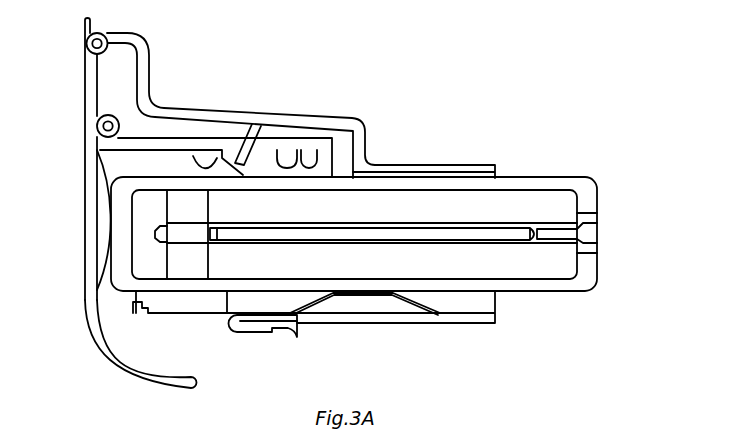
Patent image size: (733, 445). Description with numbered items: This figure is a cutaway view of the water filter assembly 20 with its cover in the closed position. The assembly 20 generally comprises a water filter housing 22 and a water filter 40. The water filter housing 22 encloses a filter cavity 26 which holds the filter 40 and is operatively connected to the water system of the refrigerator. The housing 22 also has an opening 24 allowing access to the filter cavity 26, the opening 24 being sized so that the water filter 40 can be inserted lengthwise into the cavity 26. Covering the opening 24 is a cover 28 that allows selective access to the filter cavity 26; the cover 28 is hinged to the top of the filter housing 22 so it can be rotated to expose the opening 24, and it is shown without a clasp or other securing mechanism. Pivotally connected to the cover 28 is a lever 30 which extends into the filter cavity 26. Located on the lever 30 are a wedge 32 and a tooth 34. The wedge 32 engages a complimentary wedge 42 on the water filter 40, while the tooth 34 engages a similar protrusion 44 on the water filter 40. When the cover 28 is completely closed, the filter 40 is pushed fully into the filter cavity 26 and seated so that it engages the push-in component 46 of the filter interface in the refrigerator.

The water filter assembly 20 is at (492, 73).
The water filter housing 22 is at (443, 168).
The opening 24 is at (133, 306).
The filter cavity 26 is at (503, 293).
The cover 28 is at (83, 308).
The lever 30 is at (127, 149).
The wedge 32 is at (238, 160).
The tooth 34 is at (316, 167).
The water filter 40 is at (118, 208).
The complimentary wedge 42 is at (204, 167).
The protrusion 44 is at (282, 150).
The push-in component 46 is at (598, 232).